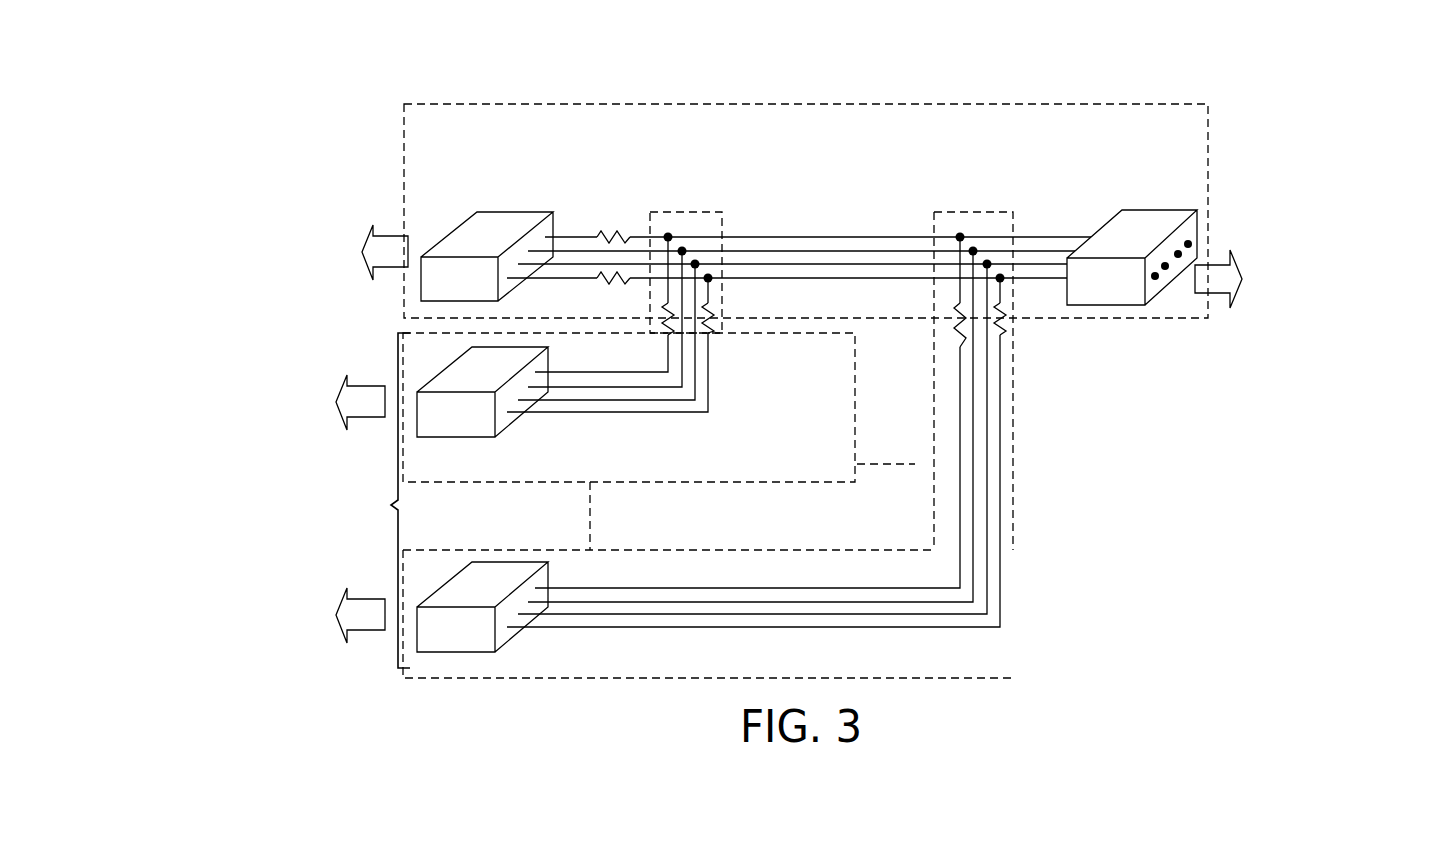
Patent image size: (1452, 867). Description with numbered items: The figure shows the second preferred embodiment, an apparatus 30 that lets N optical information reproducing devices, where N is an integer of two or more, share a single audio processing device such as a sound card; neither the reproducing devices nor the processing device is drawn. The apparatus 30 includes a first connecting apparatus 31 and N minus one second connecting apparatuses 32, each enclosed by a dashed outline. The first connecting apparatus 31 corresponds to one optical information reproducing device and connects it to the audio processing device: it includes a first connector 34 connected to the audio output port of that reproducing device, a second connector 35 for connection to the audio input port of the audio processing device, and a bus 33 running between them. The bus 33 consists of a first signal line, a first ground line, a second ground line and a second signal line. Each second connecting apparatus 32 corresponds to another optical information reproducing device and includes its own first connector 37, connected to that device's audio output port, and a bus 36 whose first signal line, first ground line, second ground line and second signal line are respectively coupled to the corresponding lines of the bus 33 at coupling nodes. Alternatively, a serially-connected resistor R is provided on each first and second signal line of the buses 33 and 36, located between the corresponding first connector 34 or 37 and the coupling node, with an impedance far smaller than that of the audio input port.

The apparatus 30 is at (899, 72).
The first connecting apparatus 31 is at (640, 104).
The second connecting apparatus 32 is at (857, 400).
The bus 33 is at (776, 237).
The first connector 34 is at (497, 218).
The second connector 35 is at (1120, 235).
The bus 36 is at (1093, 463).
The first connector 37 is at (470, 428).
The resistor R is at (608, 237).